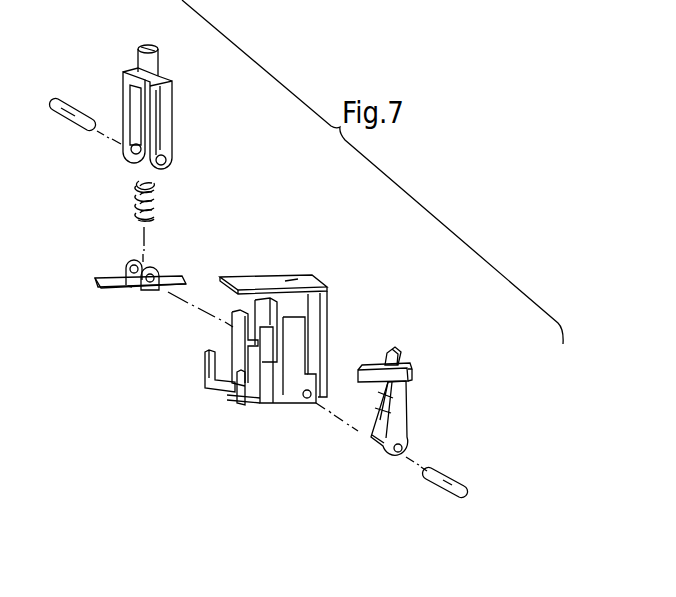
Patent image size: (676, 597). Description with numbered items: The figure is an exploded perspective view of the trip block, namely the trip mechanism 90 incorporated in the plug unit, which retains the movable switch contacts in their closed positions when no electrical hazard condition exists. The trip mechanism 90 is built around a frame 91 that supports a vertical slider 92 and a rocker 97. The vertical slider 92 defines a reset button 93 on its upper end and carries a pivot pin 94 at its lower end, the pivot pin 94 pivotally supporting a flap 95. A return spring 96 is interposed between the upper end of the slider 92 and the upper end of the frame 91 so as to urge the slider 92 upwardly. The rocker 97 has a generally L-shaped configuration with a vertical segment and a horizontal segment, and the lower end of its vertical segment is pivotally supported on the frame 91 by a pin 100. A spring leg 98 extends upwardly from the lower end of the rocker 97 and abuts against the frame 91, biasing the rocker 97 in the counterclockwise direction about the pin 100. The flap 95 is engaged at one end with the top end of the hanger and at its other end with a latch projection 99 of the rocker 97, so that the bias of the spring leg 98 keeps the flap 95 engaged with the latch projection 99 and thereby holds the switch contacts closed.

The trip mechanism 90 is at (335, 278).
The frame 91 is at (329, 328).
The vertical slider 92 is at (176, 130).
The reset button 93 is at (157, 63).
The pivot pin 94 is at (68, 112).
The flap 95 is at (133, 288).
The return spring 96 is at (162, 195).
The rocker 97 is at (409, 417).
The spring leg 98 is at (403, 348).
The latch projection 99 is at (386, 409).
The pin 100 is at (448, 493).